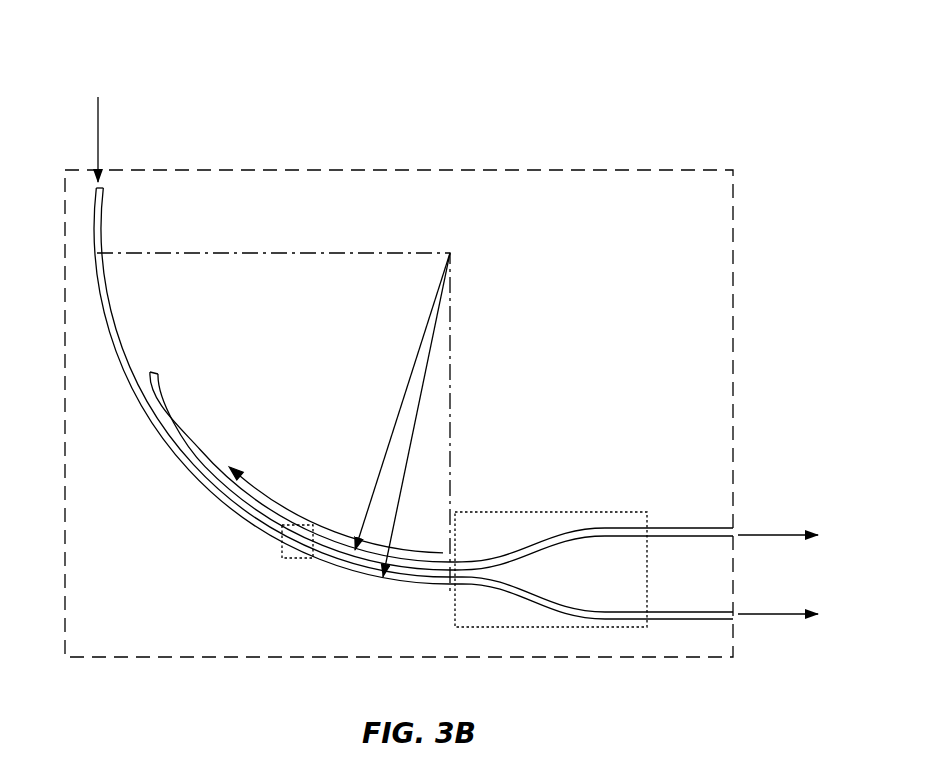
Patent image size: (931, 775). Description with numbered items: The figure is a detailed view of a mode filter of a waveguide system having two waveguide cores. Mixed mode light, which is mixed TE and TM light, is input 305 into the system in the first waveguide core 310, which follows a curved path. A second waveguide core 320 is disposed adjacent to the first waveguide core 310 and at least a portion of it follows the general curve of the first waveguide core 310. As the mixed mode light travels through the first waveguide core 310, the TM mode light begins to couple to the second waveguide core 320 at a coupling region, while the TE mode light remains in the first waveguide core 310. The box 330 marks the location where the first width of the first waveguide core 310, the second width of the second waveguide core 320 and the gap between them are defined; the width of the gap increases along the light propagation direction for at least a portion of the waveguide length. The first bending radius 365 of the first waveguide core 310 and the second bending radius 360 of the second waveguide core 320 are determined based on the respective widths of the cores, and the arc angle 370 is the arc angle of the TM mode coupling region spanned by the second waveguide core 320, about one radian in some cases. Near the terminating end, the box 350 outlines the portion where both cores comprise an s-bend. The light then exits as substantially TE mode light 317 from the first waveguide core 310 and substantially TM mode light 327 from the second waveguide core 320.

The mixed mode light input 305 is at (98, 42).
The first waveguide core 310 is at (98, 253).
The second waveguide core 320 is at (163, 400).
The box 330 is at (282, 550).
The box 350 is at (528, 512).
The bending radius R2 360 is at (423, 345).
The bending radius R1 365 is at (393, 522).
The arc angle θ 370 is at (274, 498).
The TM mode light output 327 is at (768, 472).
The TE mode light output 317 is at (775, 625).